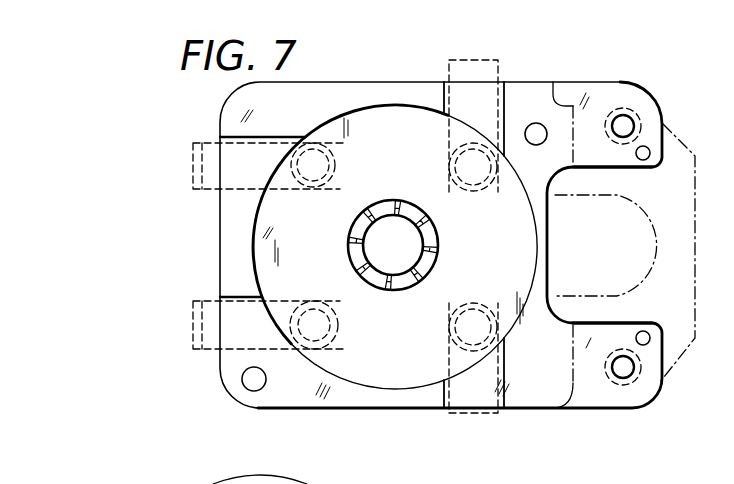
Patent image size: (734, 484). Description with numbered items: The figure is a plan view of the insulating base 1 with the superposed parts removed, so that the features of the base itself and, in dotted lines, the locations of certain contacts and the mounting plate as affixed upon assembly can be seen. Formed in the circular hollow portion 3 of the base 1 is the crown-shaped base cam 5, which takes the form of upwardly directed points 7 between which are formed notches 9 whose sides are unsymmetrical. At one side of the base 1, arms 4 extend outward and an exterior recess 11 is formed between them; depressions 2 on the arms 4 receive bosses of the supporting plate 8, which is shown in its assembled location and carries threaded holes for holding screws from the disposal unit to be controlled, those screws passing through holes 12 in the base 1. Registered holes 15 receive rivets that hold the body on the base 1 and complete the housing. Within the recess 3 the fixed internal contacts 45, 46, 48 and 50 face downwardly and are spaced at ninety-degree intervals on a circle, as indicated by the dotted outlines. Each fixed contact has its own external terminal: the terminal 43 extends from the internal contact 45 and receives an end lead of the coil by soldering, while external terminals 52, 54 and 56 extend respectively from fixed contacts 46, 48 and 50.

The insulating base 1 is at (220, 250).
The depressions 2 is at (672, 328).
The circular hollow portion 3 is at (367, 382).
The arms 4 is at (606, 398).
The base cam 5 is at (400, 286).
The points 7 is at (370, 300).
The supporting plate 8 is at (697, 215).
The notches 9 is at (430, 286).
The exterior recess 11 is at (608, 323).
The holes 12 is at (632, 370).
The registered holes 15 is at (290, 383).
The terminal 43 is at (498, 416).
The internal contact 45 is at (497, 346).
The fixed internal contact 46 is at (452, 152).
The fixed internal contact 48 is at (336, 166).
The fixed internal contact 50 is at (333, 341).
The external terminal 52 is at (499, 79).
The external terminal 54 is at (193, 170).
The external terminal 56 is at (193, 325).